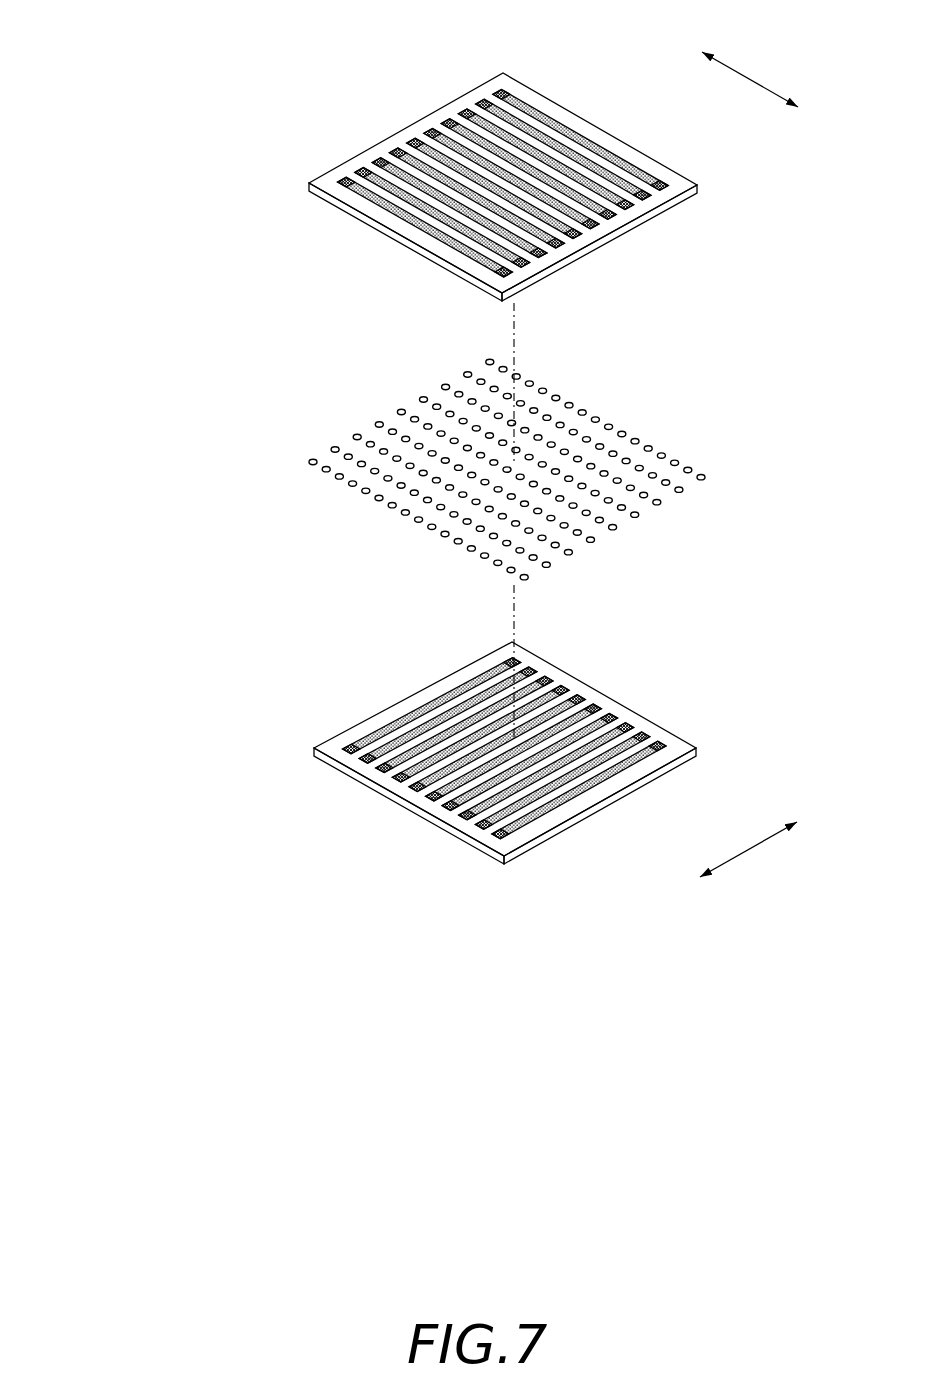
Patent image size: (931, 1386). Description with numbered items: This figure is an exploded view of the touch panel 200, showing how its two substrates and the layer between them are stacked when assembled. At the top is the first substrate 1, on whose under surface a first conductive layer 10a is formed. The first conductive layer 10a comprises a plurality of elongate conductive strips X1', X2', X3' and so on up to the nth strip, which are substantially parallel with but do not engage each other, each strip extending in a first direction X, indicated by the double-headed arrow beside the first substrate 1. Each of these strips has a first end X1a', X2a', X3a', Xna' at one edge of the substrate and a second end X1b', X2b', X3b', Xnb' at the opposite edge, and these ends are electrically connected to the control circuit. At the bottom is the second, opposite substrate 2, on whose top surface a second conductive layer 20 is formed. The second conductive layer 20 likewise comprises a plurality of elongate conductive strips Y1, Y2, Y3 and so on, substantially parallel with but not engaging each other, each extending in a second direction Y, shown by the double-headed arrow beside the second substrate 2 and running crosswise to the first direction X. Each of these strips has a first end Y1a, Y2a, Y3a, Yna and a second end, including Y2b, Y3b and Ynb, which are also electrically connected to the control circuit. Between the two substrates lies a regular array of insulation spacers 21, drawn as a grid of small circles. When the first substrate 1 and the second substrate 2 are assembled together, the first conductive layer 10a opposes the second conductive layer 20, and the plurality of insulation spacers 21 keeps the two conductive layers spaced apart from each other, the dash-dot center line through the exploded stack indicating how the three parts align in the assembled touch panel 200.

The touch panel 200 is at (143, 789).
The first substrate 1 is at (499, 182).
The first conductive layer 10a is at (628, 228).
The first direction X is at (750, 78).
The elongate conductive strip X1' is at (425, 245).
The elongate conductive strip X2' is at (429, 232).
The elongate conductive strip X3' is at (409, 213).
The first end X1a' is at (291, 198).
The second end X1b' is at (474, 305).
The first end X2a' is at (297, 151).
The second end X2b' is at (563, 300).
The first end X3a' is at (327, 128).
The second end X3b' is at (594, 276).
The first end Xna' is at (475, 59).
The second end Xnb' is at (713, 211).
The insulation spacers 21 is at (671, 462).
The second conductive layer 20 is at (492, 742).
The second substrate 2 is at (607, 803).
The second direction Y is at (752, 849).
The elongate conductive strip Y1 is at (457, 686).
The elongate conductive strip Y2 is at (417, 722).
The elongate conductive strip Y3 is at (374, 740).
The first end Y1a is at (506, 655).
The first end Y2a is at (525, 665).
The first end Y3a is at (545, 676).
The second end Y2b is at (367, 760).
The second end Y3b is at (383, 770).
The first end Yna is at (668, 728).
The second end Ynb is at (497, 836).